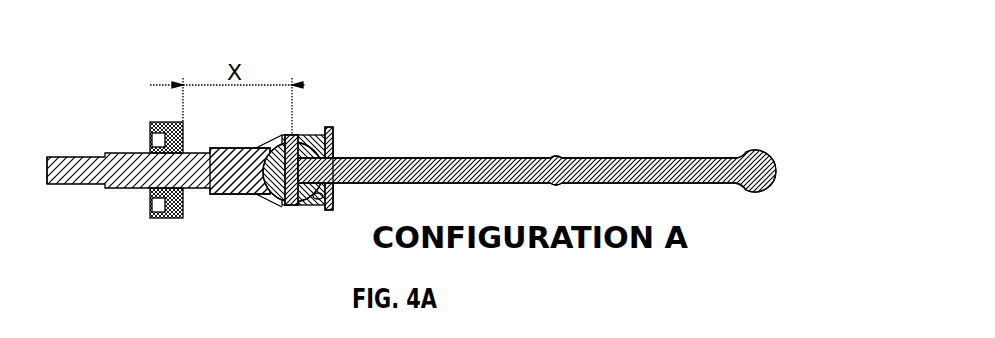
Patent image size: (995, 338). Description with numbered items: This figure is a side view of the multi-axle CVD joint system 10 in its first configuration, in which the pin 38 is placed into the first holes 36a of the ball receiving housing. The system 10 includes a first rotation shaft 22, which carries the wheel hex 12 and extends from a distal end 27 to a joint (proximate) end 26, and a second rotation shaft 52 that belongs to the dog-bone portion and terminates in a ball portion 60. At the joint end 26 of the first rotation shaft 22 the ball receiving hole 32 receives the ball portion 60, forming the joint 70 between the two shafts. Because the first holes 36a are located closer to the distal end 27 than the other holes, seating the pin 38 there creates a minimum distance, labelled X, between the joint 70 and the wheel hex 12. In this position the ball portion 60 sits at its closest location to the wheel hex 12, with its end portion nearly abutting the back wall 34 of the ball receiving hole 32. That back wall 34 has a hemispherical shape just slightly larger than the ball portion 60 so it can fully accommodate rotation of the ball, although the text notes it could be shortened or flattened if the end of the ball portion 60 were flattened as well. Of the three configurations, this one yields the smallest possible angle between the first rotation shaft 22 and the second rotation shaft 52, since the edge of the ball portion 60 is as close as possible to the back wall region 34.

The multi-axle CVD joint system 10 is at (562, 52).
The wheel hex 12 is at (155, 122).
The first rotation shaft 22 is at (107, 195).
The joint end 26 is at (340, 155).
The distal end 27 is at (48, 152).
The ball receiving hole 32 is at (333, 152).
The back wall of the ball receiving hole 34 is at (258, 195).
The first receiving housing hole 36a is at (300, 207).
The pin 38 is at (290, 132).
The second rotation shaft 52 is at (458, 152).
The ball portion 60 is at (272, 204).
The joint 70 is at (283, 232).